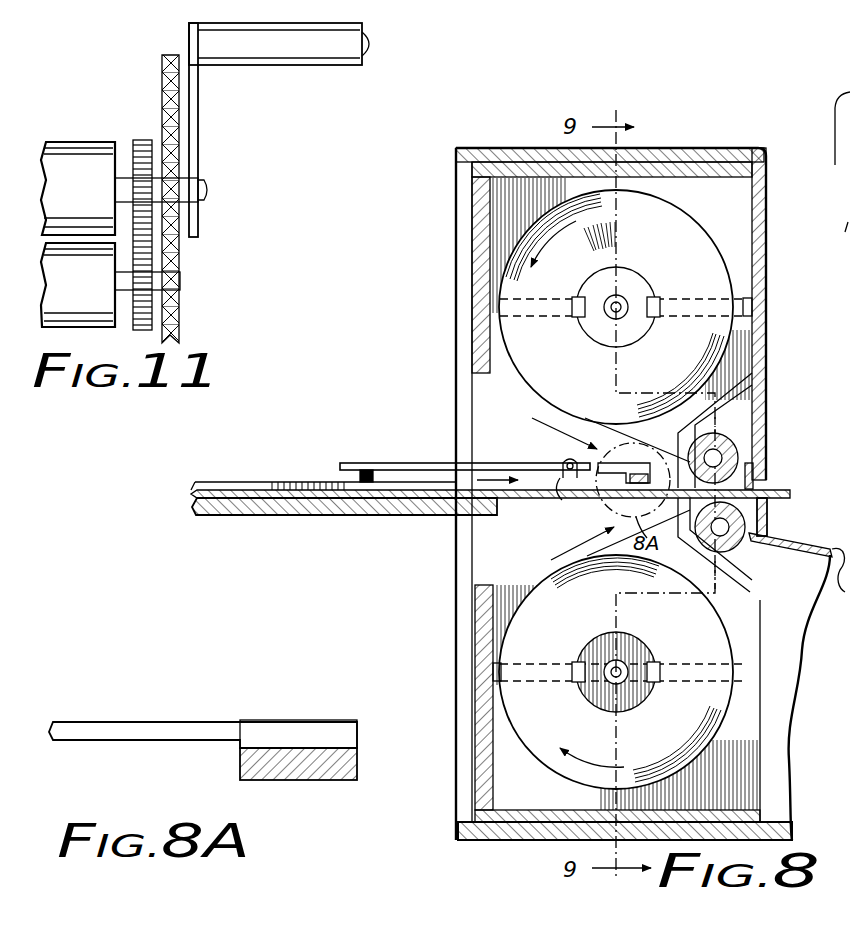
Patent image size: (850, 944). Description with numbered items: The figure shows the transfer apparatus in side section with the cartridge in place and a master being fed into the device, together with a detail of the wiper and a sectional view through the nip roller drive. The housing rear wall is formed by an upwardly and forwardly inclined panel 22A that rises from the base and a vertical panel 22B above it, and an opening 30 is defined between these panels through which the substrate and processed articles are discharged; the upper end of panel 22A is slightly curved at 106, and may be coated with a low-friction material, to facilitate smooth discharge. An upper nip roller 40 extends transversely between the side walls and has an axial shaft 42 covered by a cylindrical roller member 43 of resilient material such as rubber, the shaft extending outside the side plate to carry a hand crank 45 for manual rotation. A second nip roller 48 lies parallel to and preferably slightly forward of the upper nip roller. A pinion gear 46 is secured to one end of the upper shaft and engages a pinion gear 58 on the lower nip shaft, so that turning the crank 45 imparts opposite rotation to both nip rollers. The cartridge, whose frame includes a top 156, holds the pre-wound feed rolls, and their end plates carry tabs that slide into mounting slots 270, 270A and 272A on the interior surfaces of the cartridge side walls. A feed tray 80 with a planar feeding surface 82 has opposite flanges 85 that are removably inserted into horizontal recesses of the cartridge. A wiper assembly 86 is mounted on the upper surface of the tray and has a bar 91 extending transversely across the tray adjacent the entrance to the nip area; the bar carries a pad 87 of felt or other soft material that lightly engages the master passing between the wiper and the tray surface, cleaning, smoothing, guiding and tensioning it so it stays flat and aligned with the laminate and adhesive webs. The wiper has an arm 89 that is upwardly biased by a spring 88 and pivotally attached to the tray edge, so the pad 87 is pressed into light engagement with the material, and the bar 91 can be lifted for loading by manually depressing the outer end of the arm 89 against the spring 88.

In FIG. 11, the upper nip roller 40 is at (86, 197).
In FIG. 11, the second nip roller 48 is at (92, 298).
In FIG. 11, the pinion gear 46 is at (143, 140).
In FIG. 11, the pinion gear 58 is at (174, 310).
In FIG. 11, the hand crank 45 is at (200, 89).
In FIG. 8A, the arm 89 is at (168, 730).
In FIG. 8, the arm 89 is at (400, 462).
In FIG. 8A, the wiper assembly 86 is at (280, 711).
In FIG. 8A, the wiper bar 91 is at (348, 732).
In FIG. 8A, the pad 87 is at (340, 762).
In FIG. 8, the vertical panel 22B is at (766, 183).
In FIG. 8, the cartridge top 156 is at (708, 165).
In FIG. 8, the mounting slot 272A is at (497, 680).
In FIG. 8, the mounting slot 270 is at (762, 304).
In FIG. 8, the mounting slot 270A is at (742, 683).
In FIG. 8, the flanges 85 is at (237, 512).
In FIG. 8, the feed tray 80 is at (270, 482).
In FIG. 8, the planar feeding surface 82 is at (238, 482).
In FIG. 8, the spring 88 is at (352, 474).
In FIG. 8, the cylindrical roller member 43 is at (730, 433).
In FIG. 8, the axial shaft 42 is at (742, 455).
In FIG. 8, the opening 30 is at (758, 486).
In FIG. 8, the curved upper end 106 is at (783, 537).
In FIG. 8, the inclined panel 22A is at (819, 697).